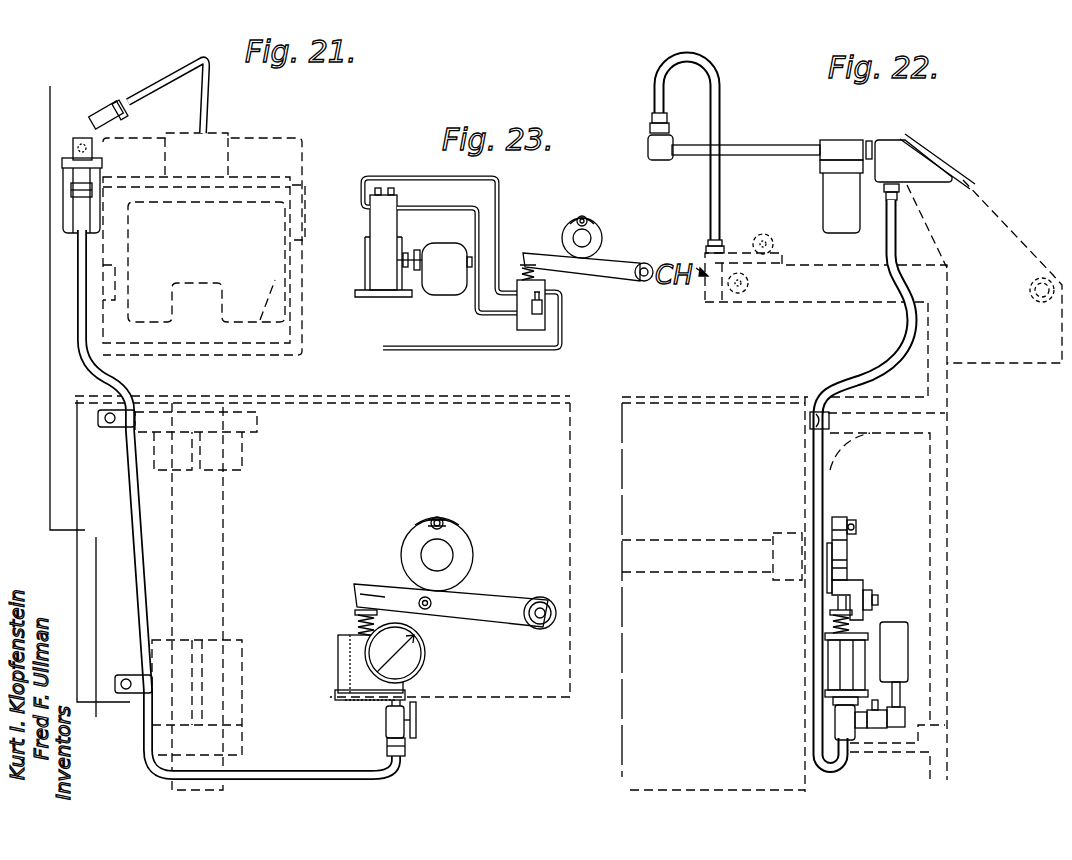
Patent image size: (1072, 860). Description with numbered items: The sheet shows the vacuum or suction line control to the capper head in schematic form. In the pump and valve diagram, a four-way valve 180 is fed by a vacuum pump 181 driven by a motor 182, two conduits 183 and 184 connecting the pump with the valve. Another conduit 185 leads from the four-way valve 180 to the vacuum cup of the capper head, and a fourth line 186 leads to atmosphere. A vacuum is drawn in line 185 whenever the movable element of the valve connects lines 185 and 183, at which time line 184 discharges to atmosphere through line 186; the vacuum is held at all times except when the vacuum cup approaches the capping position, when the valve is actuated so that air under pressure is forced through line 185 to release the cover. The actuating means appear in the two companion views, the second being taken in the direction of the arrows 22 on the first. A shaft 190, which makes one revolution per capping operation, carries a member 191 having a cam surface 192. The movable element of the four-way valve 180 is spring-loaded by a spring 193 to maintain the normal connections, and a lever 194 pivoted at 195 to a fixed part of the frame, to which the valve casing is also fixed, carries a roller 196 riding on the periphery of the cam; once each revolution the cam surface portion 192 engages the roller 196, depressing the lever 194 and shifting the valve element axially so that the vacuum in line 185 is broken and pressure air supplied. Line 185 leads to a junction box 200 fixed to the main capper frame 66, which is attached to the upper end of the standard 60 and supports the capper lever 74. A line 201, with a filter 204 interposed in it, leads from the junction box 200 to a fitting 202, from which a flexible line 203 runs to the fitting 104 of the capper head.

In FIG. 21, the arrows 22— 22 is at (80, 94).
In FIG. 21, the standard 60 is at (232, 519).
In FIG. 22, the standard 60 is at (957, 665).
In FIG. 22, the main capper body frame 66 is at (1024, 240).
In FIG. 22, the capper lever 74 is at (836, 310).
In FIG. 22, the tubular line 104 is at (707, 245).
In FIG. 21, the four-way valve 180 is at (334, 660).
In FIG. 23, the four-way valve 180 is at (507, 324).
In FIG. 22, the four-way valve 180 is at (830, 656).
In FIG. 23, the vacuum pump 181 is at (370, 268).
In FIG. 23, the motor 182 is at (437, 289).
In FIG. 23, the conduit 183 is at (417, 208).
In FIG. 23, the conduit 184 is at (410, 178).
In FIG. 21, the conduit 185 is at (141, 578).
In FIG. 23, the conduit 185 is at (562, 320).
In FIG. 22, the conduit 185 is at (906, 328).
In FIG. 23, the fourth line 186 is at (535, 316).
In FIG. 21, the shaft 190 is at (447, 553).
In FIG. 22, the shaft 190 is at (712, 540).
In FIG. 21, the member 191 is at (462, 533).
In FIG. 22, the member 191 is at (848, 549).
In FIG. 21, the cam surface 192 is at (436, 520).
In FIG. 22, the cam surface 192 is at (847, 518).
In FIG. 21, the spring 193 is at (356, 620).
In FIG. 22, the spring 193 is at (830, 622).
In FIG. 21, the lever 194 is at (492, 612).
In FIG. 22, the lever 194 is at (860, 588).
In FIG. 21, the pivot 195 is at (537, 626).
In FIG. 21, the roller 196 is at (432, 612).
In FIG. 21, the junction box 200 is at (76, 163).
In FIG. 22, the junction box 200 is at (913, 157).
In FIG. 22, the line 201 is at (772, 140).
In FIG. 22, the fitting 202 is at (655, 160).
In FIG. 21, the flexible line 203 is at (197, 108).
In FIG. 22, the flexible line 203 is at (720, 190).
In FIG. 21, the filter 204 is at (63, 193).
In FIG. 22, the filter 204 is at (828, 205).